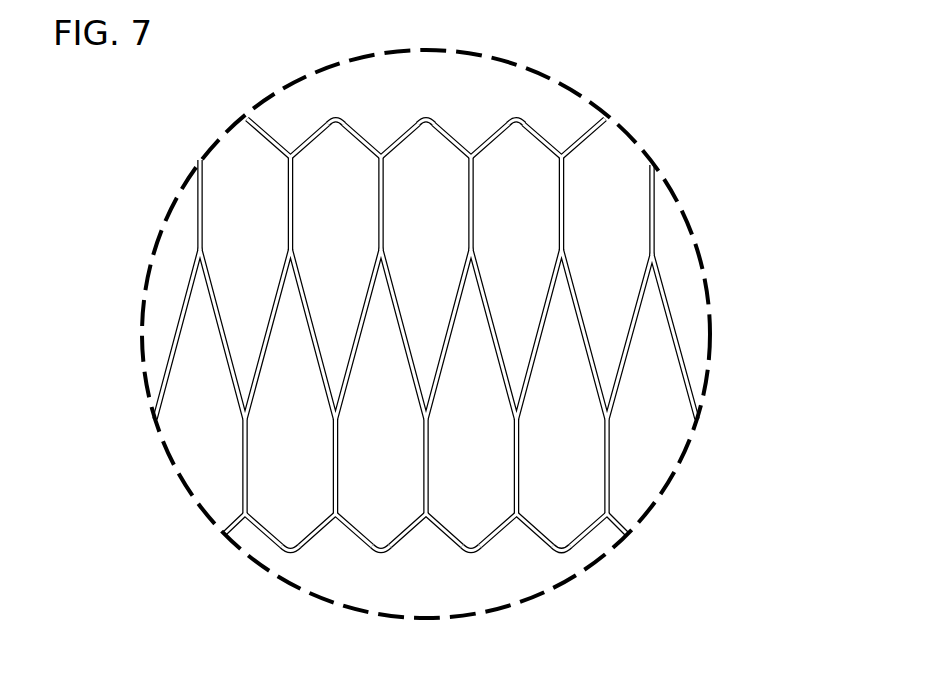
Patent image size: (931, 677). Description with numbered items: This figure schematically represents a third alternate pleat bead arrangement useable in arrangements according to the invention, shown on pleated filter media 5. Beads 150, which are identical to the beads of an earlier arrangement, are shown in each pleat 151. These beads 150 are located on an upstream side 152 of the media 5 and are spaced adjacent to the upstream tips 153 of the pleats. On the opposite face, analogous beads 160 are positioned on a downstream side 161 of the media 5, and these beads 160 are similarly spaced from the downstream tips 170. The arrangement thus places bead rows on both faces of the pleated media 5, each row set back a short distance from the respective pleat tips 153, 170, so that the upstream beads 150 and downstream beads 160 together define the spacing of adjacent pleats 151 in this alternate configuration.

The media 5 is at (454, 337).
The beads 150 is at (249, 462).
The pleat 151 is at (240, 173).
The upstream side 152 is at (316, 534).
The upstream tips 153 is at (288, 554).
The beads 160 is at (385, 218).
The downstream side 161 is at (355, 129).
The downstream tips 170 is at (326, 121).